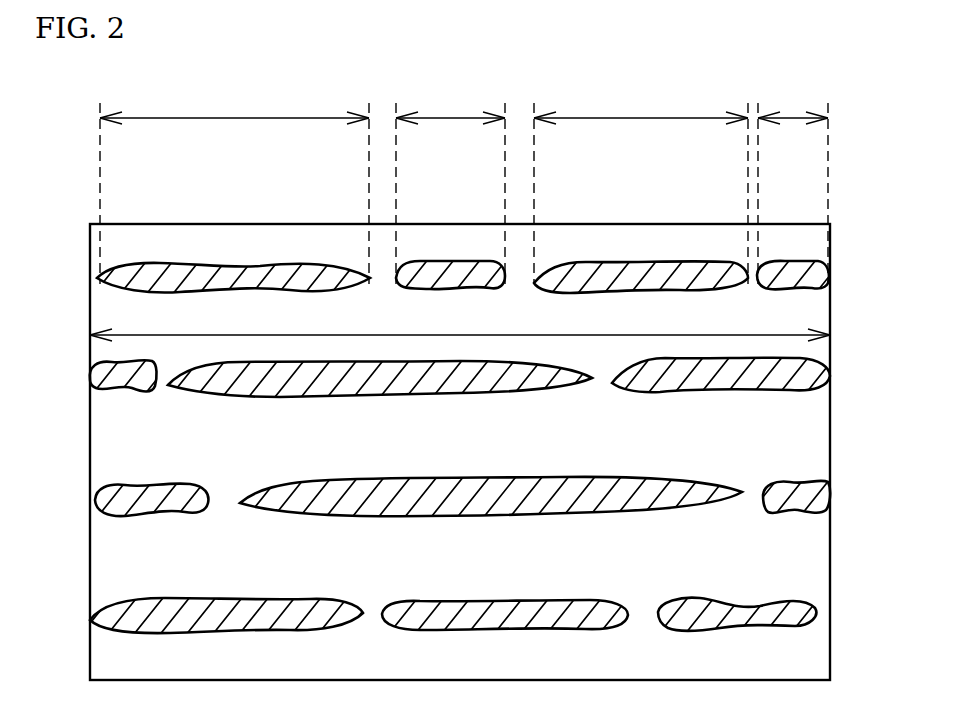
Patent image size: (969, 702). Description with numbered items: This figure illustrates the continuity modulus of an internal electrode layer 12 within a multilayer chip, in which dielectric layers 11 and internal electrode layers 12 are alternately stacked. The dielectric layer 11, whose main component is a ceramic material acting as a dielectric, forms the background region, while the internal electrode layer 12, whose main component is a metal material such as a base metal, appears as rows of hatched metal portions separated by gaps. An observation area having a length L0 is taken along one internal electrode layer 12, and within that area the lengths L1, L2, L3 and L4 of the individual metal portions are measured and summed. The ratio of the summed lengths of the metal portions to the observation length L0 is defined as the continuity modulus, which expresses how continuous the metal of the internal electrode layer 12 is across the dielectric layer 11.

The dielectric layer 11 is at (810, 434).
The internal electrode layer 12 is at (813, 272).
The length of observation area L0 is at (460, 321).
The length of metal portion L1 is at (234, 180).
The length of metal portion L2 is at (450, 180).
The length of metal portion L3 is at (641, 180).
The length of metal portion L4 is at (793, 180).